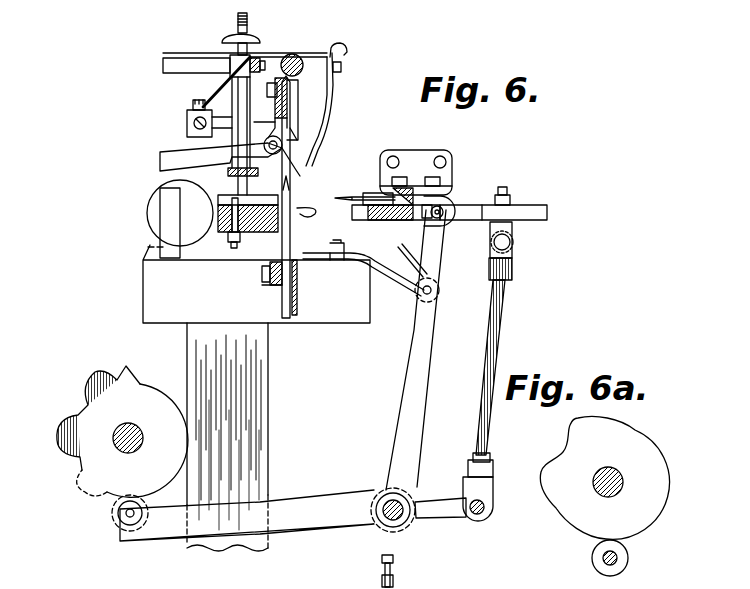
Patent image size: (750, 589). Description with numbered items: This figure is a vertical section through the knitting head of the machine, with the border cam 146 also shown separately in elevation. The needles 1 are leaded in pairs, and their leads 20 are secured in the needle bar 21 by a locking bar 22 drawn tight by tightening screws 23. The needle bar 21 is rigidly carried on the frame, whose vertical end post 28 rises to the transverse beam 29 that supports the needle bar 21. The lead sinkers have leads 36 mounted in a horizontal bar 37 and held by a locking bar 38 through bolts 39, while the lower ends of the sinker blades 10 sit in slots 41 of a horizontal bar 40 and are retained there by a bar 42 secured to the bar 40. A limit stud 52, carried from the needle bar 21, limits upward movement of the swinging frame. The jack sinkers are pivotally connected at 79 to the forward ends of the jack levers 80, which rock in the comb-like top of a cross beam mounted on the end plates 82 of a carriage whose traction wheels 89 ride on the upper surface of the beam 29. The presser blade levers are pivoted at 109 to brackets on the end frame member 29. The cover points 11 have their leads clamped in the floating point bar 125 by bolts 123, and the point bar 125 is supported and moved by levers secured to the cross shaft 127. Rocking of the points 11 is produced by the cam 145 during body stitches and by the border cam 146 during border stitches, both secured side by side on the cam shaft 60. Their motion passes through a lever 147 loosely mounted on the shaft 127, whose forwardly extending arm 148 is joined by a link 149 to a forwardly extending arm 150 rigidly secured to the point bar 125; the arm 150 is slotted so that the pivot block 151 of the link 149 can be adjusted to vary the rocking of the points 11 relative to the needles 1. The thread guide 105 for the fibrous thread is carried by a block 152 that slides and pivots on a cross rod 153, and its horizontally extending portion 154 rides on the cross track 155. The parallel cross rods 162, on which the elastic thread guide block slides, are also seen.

In FIG. 6, the needles 1 is at (305, 214).
In FIG. 6, the blades of the lead sinkers 10 is at (282, 270).
In FIG. 6, the cover points 11 is at (345, 202).
In FIG. 6, the leads 20 is at (262, 232).
In FIG. 6, the needle bar 21 is at (182, 224).
In FIG. 6, the locking bar 22 is at (218, 198).
In FIG. 6, the tightening screws 23 is at (234, 248).
In FIG. 6, the vertical end post 28 is at (270, 375).
In FIG. 6, the transverse beams 29 is at (318, 323).
In FIG. 6, the leads of the lead sinkers 36 is at (291, 105).
In FIG. 6, the horizontal bar 37 is at (282, 118).
In FIG. 6, the locking bar 38 is at (290, 84).
In FIG. 6, the bolts 39 is at (267, 90).
In FIG. 6, the horizontal bar 40 is at (270, 285).
In FIG. 6, the slots 41 is at (284, 272).
In FIG. 6, the bar 42 is at (298, 296).
In FIG. 6, the limit studs 52 is at (382, 562).
In FIG. 6, the cam shaft 60 is at (113, 442).
In FIG. 6, the pivot 79 is at (281, 143).
In FIG. 6, the jack levers 80 is at (162, 156).
In FIG. 6, the end plates 82 is at (150, 247).
In FIG. 6, the traction wheels 89 is at (150, 212).
In FIG. 6, the thread guide 105 is at (337, 112).
In FIG. 6, the pivot 109 is at (432, 290).
In FIG. 6, the bolts 123 is at (380, 182).
In FIG. 6, the point bar 125 is at (380, 222).
In FIG. 6, the cross shaft 127 is at (412, 514).
In FIG. 6, the cam 145 is at (80, 492).
In FIG. 6, the border cam 146 is at (92, 378).
In FIG. 6A, the border cam 146 is at (652, 497).
In FIG. 6, the lever 147 is at (290, 540).
In FIG. 6, the forwardly extending arm 148 is at (440, 505).
In FIG. 6, the link 149 is at (503, 328).
In FIG. 6, the forwardly extending arm 150 is at (540, 212).
In FIG. 6, the pivot block 151 is at (516, 232).
In FIG. 6, the block 152 is at (188, 112).
In FIG. 6, the cross rod 153 is at (194, 126).
In FIG. 6, the horizontally extending portion 154 is at (332, 50).
In FIG. 6, the cross track 155 is at (255, 56).
In FIG. 6, the parallel cross rods 162 is at (412, 142).